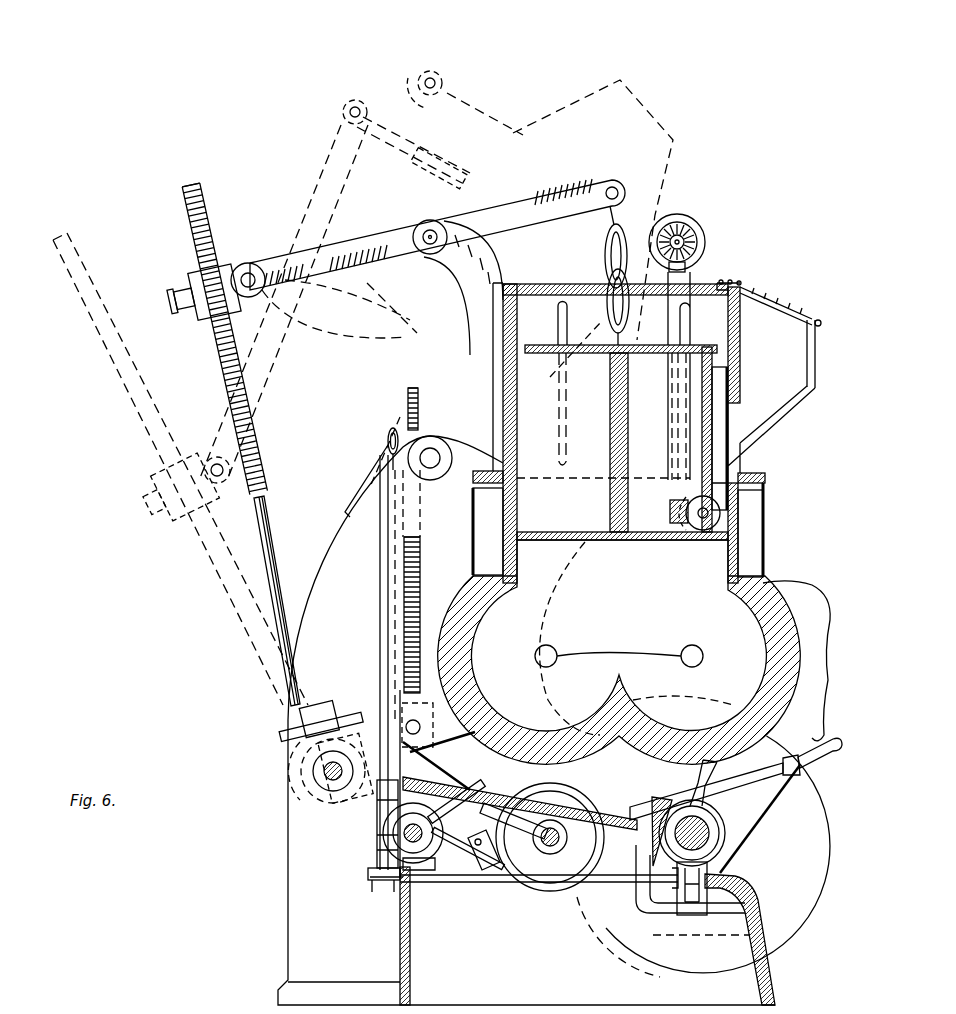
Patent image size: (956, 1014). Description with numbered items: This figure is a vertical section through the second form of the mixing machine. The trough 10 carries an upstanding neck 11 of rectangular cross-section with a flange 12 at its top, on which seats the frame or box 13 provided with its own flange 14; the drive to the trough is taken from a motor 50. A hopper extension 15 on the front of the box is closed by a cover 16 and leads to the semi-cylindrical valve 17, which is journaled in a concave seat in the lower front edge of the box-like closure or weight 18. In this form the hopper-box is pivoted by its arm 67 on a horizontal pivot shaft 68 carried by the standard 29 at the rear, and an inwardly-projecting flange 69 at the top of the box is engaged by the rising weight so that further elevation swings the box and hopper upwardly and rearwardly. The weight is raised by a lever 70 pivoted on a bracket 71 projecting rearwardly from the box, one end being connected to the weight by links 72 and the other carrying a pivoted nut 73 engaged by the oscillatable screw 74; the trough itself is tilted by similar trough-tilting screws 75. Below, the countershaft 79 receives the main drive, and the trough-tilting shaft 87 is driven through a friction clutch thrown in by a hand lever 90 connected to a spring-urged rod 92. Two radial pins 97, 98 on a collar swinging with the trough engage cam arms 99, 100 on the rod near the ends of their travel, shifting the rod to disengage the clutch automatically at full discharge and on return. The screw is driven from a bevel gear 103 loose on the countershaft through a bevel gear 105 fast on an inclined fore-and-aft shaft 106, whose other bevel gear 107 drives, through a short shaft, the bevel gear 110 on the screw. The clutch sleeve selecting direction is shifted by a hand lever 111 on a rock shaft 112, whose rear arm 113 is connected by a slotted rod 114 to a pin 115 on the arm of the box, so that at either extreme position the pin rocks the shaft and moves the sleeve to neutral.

The trough 10 is at (619, 621).
The upstanding neck 11 is at (500, 515).
The flange 12 is at (473, 498).
The frame or box 13 is at (493, 365).
The flange 14 is at (473, 477).
The hopper extension 15 is at (763, 435).
The cover 16 is at (778, 302).
The semi-cylindrical valve 17 is at (700, 532).
The box-like closure or weight 18 is at (622, 406).
The standard 29 is at (395, 578).
The motor 50 is at (619, 651).
The arm 67 is at (445, 445).
The horizontal pivot shaft 68 is at (423, 445).
The inwardly-projecting flange 69 is at (545, 284).
The lever 70 is at (518, 215).
The bracket 71 is at (488, 285).
The links 72 is at (630, 255).
The pivoted nut 73 is at (232, 262).
The oscillatable screw 74 is at (268, 462).
The trough-tilting screws 75 is at (425, 581).
The countershaft 79 is at (711, 828).
The trough-tilting shaft 87 is at (418, 843).
The hand lever 90 is at (780, 757).
The rod 92 is at (550, 837).
The radial pin 97 is at (480, 782).
The radial pin 98 is at (462, 845).
The cam arm 99 is at (508, 805).
The cam arm 100 is at (503, 870).
The bevel gear 103 is at (722, 812).
The bevel gear 105 is at (656, 798).
The inclined fore-and-aft shaft 106 is at (500, 805).
The bevel gear 107 is at (377, 814).
The bevel gear 110 is at (340, 715).
The hand lever 111 is at (712, 770).
The rock shaft 112 is at (606, 884).
The arm 113 is at (368, 882).
The rod 114 is at (380, 570).
The pin 115 is at (388, 441).